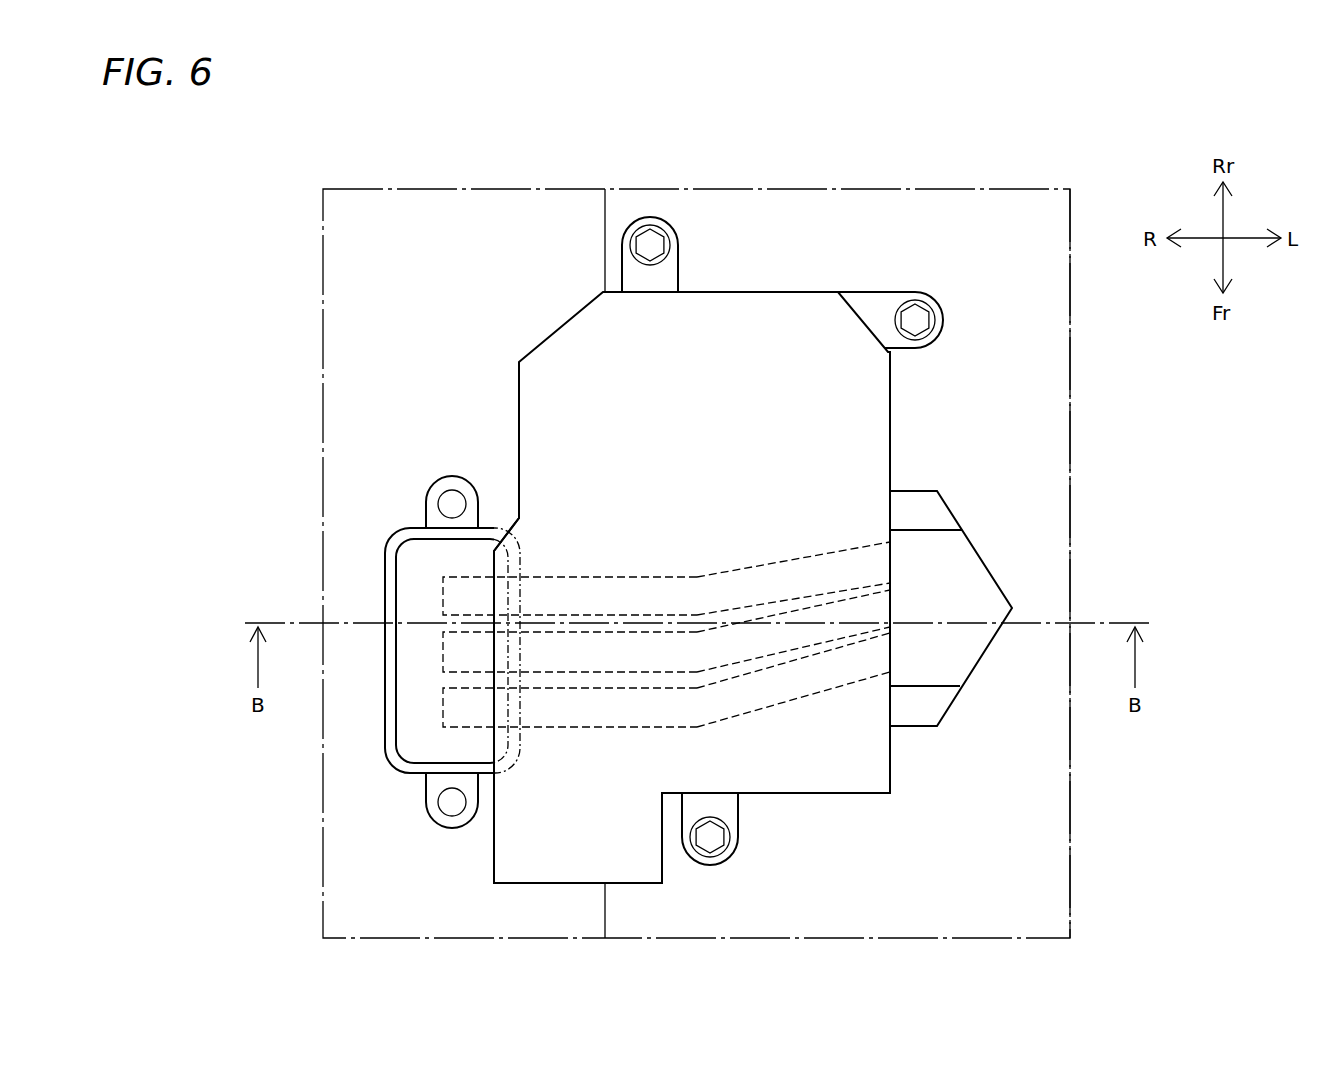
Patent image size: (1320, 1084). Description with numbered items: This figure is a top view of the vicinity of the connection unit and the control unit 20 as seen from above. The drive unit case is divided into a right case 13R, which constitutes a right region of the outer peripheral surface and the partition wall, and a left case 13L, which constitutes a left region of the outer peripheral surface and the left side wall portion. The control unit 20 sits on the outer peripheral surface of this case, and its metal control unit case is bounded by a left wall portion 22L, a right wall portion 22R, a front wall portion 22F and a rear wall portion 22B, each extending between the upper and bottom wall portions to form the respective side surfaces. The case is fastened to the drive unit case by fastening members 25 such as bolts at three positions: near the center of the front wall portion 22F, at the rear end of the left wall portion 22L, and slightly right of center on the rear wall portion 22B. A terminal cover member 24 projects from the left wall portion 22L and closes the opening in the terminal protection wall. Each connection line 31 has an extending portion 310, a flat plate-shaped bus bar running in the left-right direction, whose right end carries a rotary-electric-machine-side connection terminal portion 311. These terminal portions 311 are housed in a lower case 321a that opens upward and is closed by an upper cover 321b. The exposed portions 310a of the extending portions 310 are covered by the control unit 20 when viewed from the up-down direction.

The right case 13R is at (382, 852).
The left case 13L is at (997, 820).
The control unit 20 is at (570, 381).
The rear wall portion 22B is at (750, 290).
The left wall portion 22L is at (893, 395).
The right wall portion 22R is at (519, 445).
The front wall portion 22F is at (850, 795).
The fastening member 25 is at (648, 246).
The terminal cover member 24 is at (950, 565).
The connection line 31 is at (666, 606).
The extending portion 310 is at (643, 707).
The exposed portion 310a is at (753, 705).
The rotary-electric-machine-side connection terminal portion 311 is at (465, 705).
The lower case 321a is at (390, 757).
The upper cover 321b is at (412, 691).